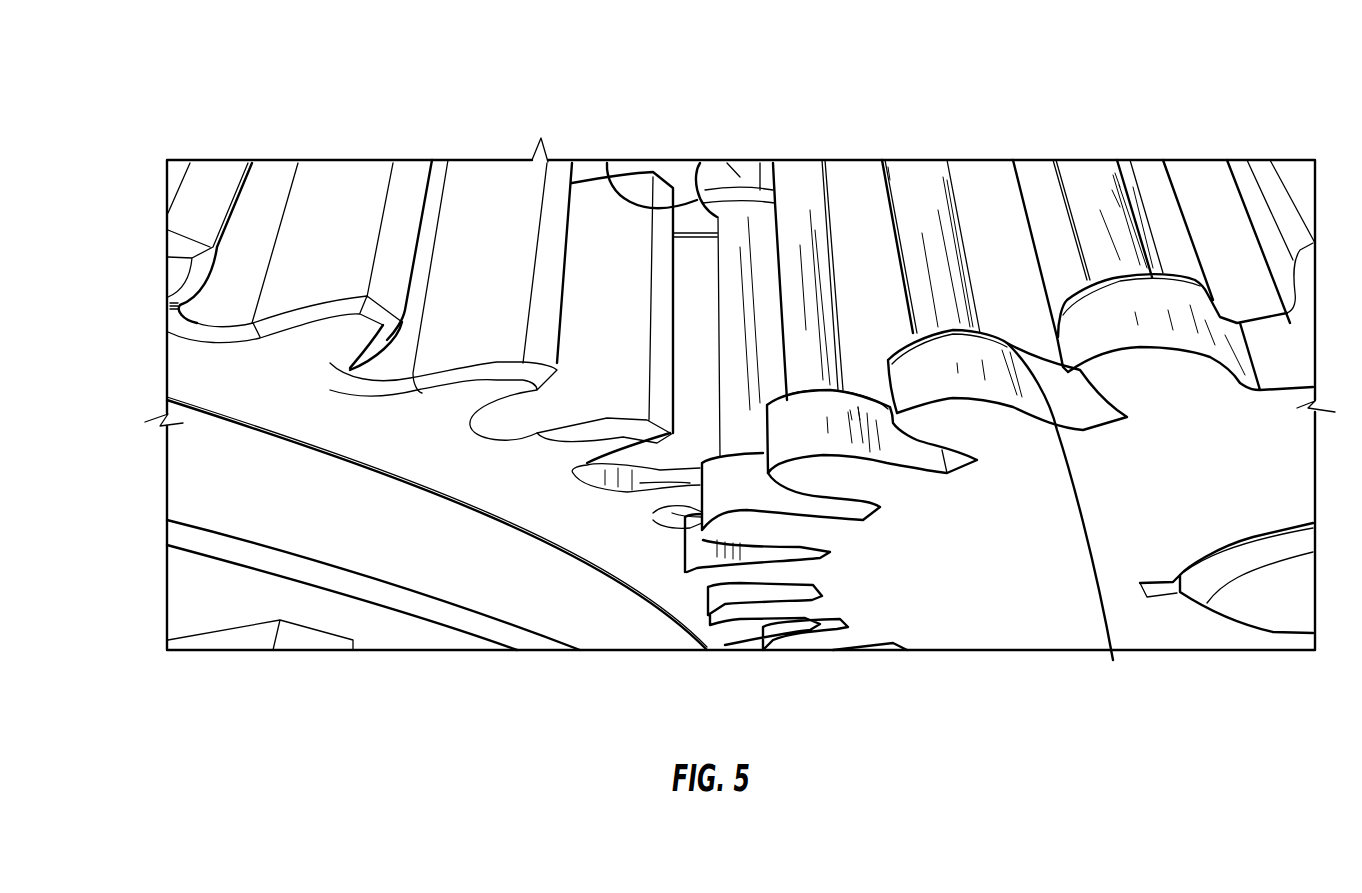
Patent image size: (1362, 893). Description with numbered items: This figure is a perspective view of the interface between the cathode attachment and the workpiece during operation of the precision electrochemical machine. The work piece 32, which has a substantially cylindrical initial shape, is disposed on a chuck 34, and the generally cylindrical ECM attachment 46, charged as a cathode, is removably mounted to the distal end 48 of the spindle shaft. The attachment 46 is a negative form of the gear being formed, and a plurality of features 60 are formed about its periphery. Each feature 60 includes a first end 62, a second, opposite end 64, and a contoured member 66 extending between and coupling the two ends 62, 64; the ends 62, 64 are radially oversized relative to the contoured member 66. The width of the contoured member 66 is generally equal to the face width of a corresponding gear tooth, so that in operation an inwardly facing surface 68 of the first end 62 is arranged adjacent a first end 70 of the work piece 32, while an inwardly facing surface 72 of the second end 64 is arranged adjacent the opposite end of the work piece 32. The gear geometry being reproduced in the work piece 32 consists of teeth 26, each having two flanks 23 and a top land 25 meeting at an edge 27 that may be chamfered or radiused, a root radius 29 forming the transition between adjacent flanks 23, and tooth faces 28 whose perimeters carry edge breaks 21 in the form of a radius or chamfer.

The edge break 21 is at (567, 430).
The flank 23 is at (340, 200).
The top land 25 is at (414, 176).
The teeth 26 is at (583, 350).
The edge 27 is at (427, 200).
The tooth face 28 is at (347, 333).
The root radius 29 is at (214, 302).
The work piece 32 is at (315, 425).
The chuck 34 is at (535, 603).
The ECM attachment 46 is at (900, 187).
The distal end 48 is at (1262, 597).
The features 60 is at (1093, 242).
The first end 62 is at (803, 440).
The second end 64 is at (738, 190).
The contoured member 66 is at (810, 210).
The inwardly facing surface 68 is at (893, 333).
The first end 70 is at (553, 542).
The inwardly facing surface 72 is at (617, 180).